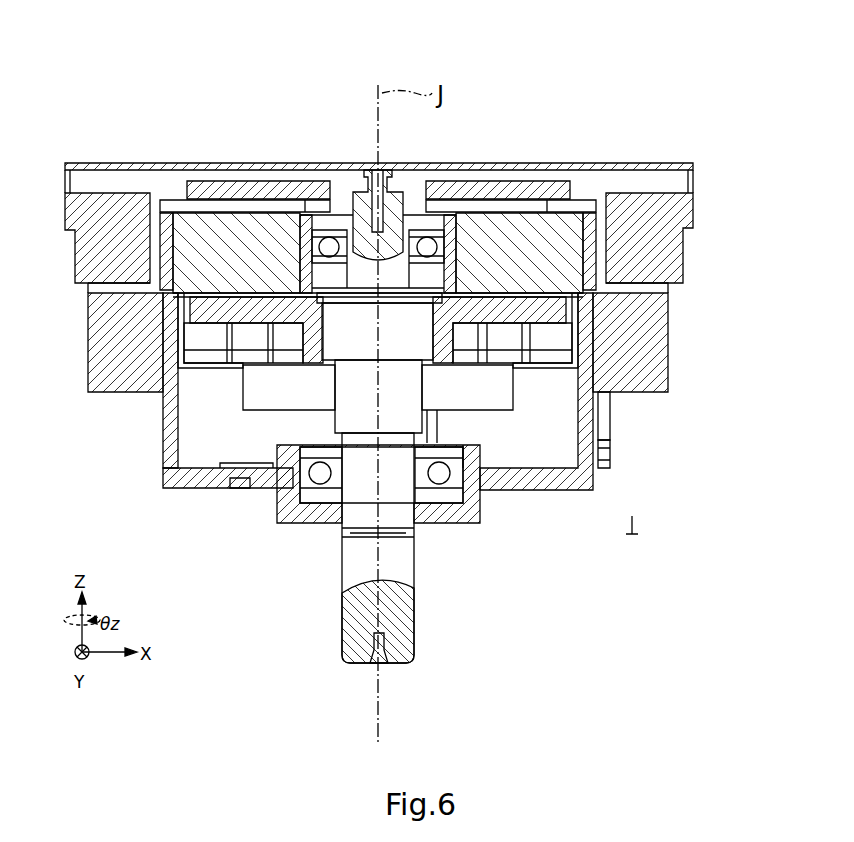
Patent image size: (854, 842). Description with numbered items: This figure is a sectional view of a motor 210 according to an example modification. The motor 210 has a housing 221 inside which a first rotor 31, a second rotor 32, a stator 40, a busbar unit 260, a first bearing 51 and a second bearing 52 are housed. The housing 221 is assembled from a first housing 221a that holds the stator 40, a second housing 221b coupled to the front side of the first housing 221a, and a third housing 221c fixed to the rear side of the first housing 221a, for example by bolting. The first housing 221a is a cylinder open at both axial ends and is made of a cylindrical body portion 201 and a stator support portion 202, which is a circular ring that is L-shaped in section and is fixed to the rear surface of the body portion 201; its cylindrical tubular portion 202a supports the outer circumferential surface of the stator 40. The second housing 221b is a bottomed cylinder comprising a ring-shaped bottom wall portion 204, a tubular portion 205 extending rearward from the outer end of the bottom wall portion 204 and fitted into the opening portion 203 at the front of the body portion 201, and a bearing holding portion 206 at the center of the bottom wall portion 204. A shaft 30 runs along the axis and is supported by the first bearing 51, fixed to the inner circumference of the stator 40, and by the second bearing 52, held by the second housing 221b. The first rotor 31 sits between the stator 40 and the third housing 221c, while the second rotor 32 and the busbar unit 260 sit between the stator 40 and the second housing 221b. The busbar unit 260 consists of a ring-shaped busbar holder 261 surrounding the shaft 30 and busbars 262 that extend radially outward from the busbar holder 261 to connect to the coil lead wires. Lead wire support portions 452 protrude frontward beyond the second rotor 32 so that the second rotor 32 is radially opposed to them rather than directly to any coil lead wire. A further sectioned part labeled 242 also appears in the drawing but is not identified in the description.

The motor 210 is at (622, 93).
The housing 221 is at (456, 330).
The first housing 221a is at (431, 292).
The second housing 221b is at (686, 450).
The third housing 221c is at (672, 262).
The body portion 201 is at (663, 372).
The stator support portion 202 is at (663, 287).
The cylindrical tubular portion 202a is at (593, 265).
The first rotor 31 is at (500, 187).
The second rotor 32 is at (220, 300).
The stator 40 is at (283, 232).
The first bearing 51 is at (413, 237).
The second bearing 52 is at (335, 500).
The shaft 30 is at (354, 652).
The stator core 242 is at (200, 338).
The opening portion 203 is at (213, 372).
The lead wire support portion 452 is at (175, 303).
The busbar holder 261 is at (247, 398).
The busbars 262 is at (175, 408).
The busbar unit 260 is at (253, 413).
The bottom wall portion 204 is at (553, 490).
The tubular portion 205 is at (592, 423).
The bearing holding portion 206 is at (463, 500).